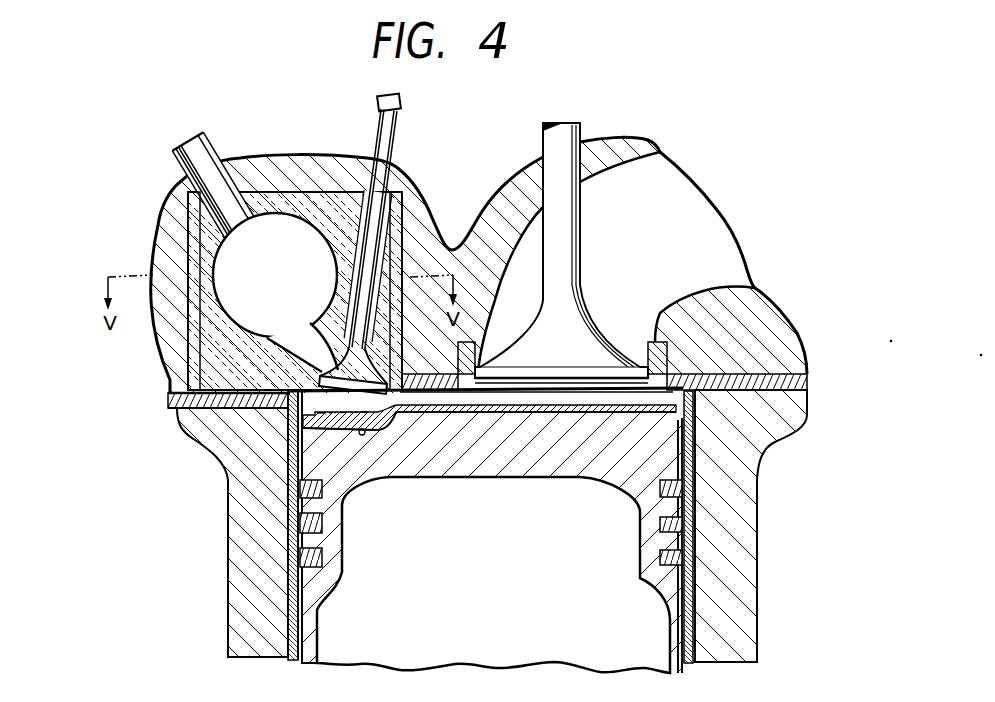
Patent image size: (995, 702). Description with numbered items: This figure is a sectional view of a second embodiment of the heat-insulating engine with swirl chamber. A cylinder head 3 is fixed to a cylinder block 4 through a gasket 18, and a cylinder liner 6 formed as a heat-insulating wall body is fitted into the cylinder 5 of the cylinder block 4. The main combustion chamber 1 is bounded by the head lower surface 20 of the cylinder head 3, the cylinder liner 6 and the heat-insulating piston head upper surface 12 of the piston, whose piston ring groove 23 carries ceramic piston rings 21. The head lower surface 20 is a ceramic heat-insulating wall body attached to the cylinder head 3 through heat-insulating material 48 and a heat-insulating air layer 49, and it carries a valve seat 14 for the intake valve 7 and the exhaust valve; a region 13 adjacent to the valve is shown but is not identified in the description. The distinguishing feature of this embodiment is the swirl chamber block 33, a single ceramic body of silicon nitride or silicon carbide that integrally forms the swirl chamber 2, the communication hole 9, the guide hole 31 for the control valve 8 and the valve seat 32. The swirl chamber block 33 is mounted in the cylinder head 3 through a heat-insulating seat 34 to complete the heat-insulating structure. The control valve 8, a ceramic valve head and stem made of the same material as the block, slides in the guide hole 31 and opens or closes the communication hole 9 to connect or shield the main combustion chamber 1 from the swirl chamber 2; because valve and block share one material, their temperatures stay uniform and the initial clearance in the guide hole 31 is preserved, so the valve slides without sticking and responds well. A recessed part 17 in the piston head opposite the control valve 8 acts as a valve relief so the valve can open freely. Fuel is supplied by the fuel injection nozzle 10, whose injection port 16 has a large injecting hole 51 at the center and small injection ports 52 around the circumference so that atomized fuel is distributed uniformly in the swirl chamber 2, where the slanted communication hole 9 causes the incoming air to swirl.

The main combustion chamber 1 is at (502, 414).
The swirl chamber 2 is at (272, 228).
The cylinder head 3 is at (172, 320).
The cylinder block 4 is at (237, 523).
The cylinder 5 is at (288, 557).
The cylinder liner 6 is at (288, 603).
The intake valve 7 is at (557, 253).
The control valve 8 is at (407, 197).
The communication hole 9 is at (213, 447).
The fuel injection nozzle 10 is at (203, 150).
The piston head upper surface 12 is at (440, 405).
The exhaust port 13 is at (667, 190).
The valve seat 14 is at (477, 366).
The injection port 16 is at (252, 240).
The recessed part 17 is at (368, 432).
The gasket 18 is at (177, 402).
The head lower surface 20 is at (468, 412).
The piston rings 21 is at (322, 545).
The piston ring groove 23 is at (332, 600).
The guide hole 31 is at (368, 225).
The valve seat 32 is at (322, 368).
The swirl chamber block 33 is at (295, 200).
The heat-insulating seat 34 is at (188, 197).
The heat-insulating material 48 is at (423, 390).
The heat-insulating air layer 49 is at (420, 385).
The large injecting hole 51 is at (275, 292).
The small injection ports 52 is at (230, 230).